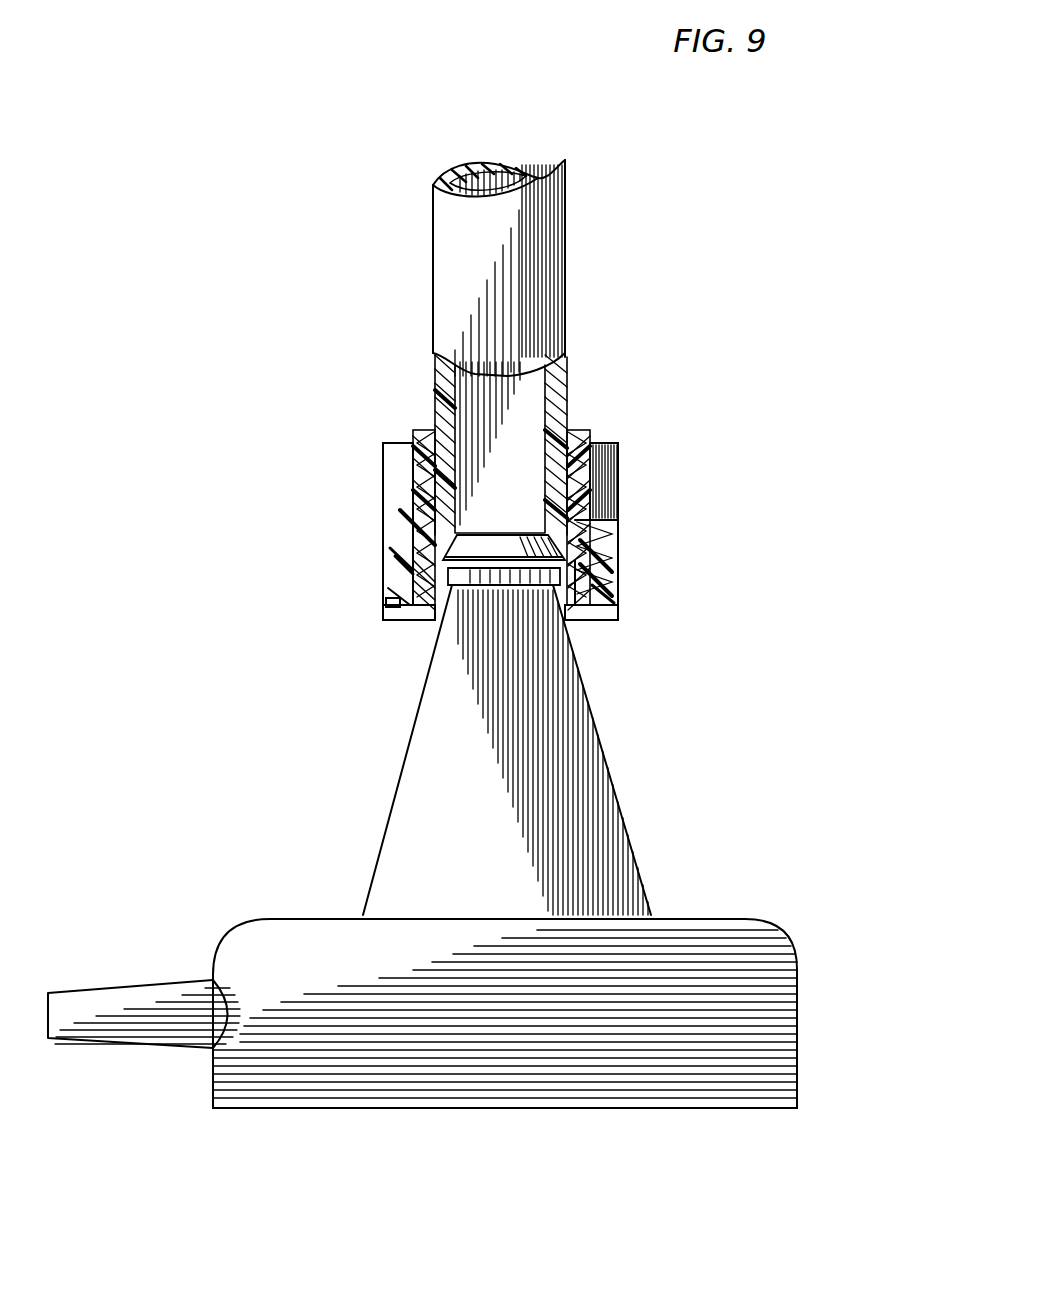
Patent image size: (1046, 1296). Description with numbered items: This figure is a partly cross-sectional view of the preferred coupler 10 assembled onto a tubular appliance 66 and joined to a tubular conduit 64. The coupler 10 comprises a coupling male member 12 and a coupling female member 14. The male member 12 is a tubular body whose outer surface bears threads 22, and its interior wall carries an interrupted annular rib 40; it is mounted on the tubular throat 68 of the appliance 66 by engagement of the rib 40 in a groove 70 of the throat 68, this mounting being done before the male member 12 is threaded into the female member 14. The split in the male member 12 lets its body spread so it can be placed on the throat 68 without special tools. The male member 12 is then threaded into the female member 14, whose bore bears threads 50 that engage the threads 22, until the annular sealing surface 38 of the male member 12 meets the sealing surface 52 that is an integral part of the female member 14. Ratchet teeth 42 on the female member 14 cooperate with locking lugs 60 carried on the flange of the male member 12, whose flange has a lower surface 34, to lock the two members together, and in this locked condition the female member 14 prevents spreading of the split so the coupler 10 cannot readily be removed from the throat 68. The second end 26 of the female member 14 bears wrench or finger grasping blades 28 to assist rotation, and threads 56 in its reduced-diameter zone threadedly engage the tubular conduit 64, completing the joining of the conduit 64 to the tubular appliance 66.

The coupler 10 is at (710, 415).
The coupling male member 12 is at (388, 627).
The coupling female member 14 is at (382, 478).
The threads 22 is at (415, 560).
The second end 26 is at (583, 432).
The wrench or finger grasping blades 28 is at (608, 480).
The lower surface 34 is at (590, 622).
The sealing surface 38 is at (415, 527).
The interrupted annular rib 40 is at (415, 573).
The ratchet teeth 42 is at (612, 600).
The threads 50 is at (618, 567).
The sealing surface 52 is at (600, 533).
The threads 56 is at (420, 440).
The locking lugs 60 is at (388, 605).
The tubular conduit 64 is at (512, 259).
The tubular appliance 66 is at (522, 730).
The tubular throat 68 is at (540, 590).
The groove 70 is at (488, 575).